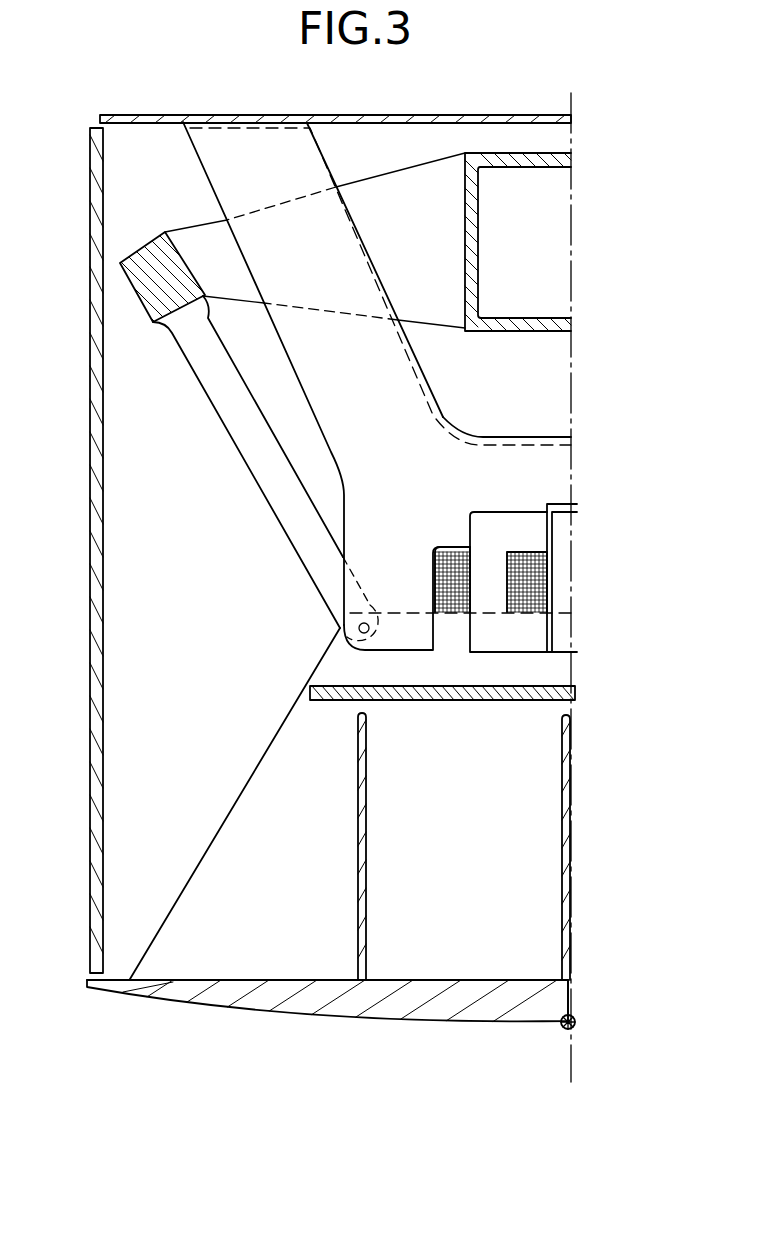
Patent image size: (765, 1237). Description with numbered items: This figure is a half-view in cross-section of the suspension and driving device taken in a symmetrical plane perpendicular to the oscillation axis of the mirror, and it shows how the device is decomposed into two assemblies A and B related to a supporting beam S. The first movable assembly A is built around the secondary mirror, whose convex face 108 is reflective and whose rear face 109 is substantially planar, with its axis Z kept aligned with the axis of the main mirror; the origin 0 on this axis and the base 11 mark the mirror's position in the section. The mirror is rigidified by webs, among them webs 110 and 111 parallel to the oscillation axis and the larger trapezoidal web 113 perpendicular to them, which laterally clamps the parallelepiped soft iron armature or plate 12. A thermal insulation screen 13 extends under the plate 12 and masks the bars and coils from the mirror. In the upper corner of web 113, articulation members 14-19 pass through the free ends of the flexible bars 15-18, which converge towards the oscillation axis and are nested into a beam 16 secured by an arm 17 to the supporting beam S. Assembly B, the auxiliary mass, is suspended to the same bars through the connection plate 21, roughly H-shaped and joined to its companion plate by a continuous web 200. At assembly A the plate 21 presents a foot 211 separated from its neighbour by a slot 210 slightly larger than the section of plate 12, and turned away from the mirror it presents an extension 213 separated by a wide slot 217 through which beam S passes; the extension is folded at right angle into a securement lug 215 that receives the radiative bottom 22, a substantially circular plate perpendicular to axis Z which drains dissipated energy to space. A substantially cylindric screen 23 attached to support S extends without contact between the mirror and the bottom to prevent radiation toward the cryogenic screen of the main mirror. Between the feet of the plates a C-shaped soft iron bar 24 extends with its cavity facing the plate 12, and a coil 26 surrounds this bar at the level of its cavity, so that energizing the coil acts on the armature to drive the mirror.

The radiative bottom 22 is at (395, 115).
The screen 23 is at (90, 400).
The axis Z is at (580, 589).
The supporting beam S is at (531, 248).
The arm 17 is at (425, 248).
The beam 16 is at (157, 257).
The bars 15-18 is at (215, 378).
The extension 213 is at (372, 381).
The securement lug 215 is at (206, 131).
The wide slot 217 is at (488, 436).
The continuous web 200 is at (548, 438).
The connection plate 21 is at (418, 413).
The assembly B is at (530, 484).
The foot 211 is at (406, 577).
The C-shaped bar of soft iron 24 is at (513, 530).
The slot 210 is at (557, 503).
The coil 26 is at (445, 548).
The armature or plate 12 is at (570, 613).
The articulation members 14-19 is at (340, 628).
The web 113 is at (203, 856).
The thermal insulation screen 13 is at (540, 688).
The web 110 is at (366, 806).
The web 111 is at (575, 900).
The assembly A is at (547, 808).
The convex face 108 is at (432, 1022).
The rear face 109 is at (428, 980).
The base 11 is at (547, 997).
The origin point 0 is at (577, 1018).